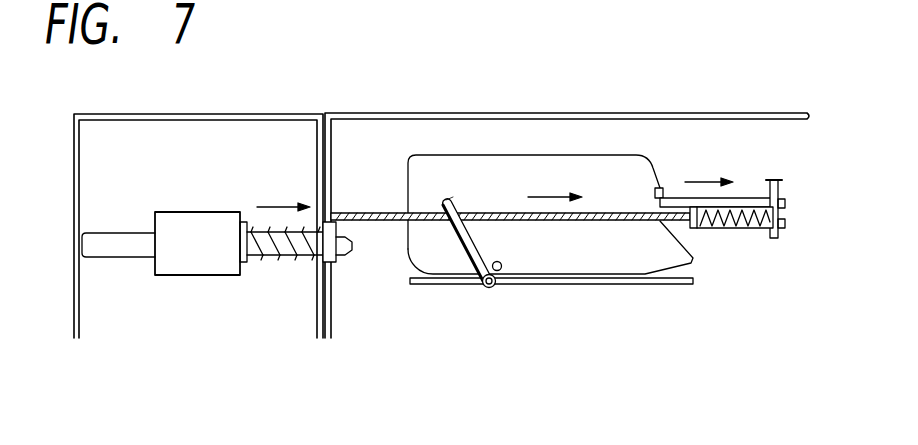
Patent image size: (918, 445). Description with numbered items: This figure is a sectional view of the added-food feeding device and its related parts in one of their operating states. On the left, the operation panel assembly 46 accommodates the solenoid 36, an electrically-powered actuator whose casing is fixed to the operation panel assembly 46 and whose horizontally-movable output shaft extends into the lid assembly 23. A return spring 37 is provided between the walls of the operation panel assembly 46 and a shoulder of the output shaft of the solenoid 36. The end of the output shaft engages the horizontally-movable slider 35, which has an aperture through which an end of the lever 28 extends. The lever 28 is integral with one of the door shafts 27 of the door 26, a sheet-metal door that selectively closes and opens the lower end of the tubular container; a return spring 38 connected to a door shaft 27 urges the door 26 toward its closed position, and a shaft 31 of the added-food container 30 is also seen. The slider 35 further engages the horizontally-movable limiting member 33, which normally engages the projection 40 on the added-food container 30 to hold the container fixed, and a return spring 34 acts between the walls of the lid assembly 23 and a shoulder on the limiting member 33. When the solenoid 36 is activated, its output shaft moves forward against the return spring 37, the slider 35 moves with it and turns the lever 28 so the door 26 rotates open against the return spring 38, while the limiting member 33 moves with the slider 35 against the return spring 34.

The frame 23 is at (467, 111).
The door 26 is at (668, 285).
The door shafts 27 is at (486, 287).
The lever 28 is at (458, 228).
The added-food container 30 is at (550, 155).
The shafts 31 is at (503, 265).
The limiting member 33 is at (750, 198).
The return spring 34 is at (718, 229).
The slider 35 is at (604, 213).
The solenoid 36 is at (183, 212).
The return spring 37 is at (265, 257).
The return spring 38 is at (500, 287).
The projection 40 is at (661, 188).
The operation panel assembly 46 is at (253, 113).